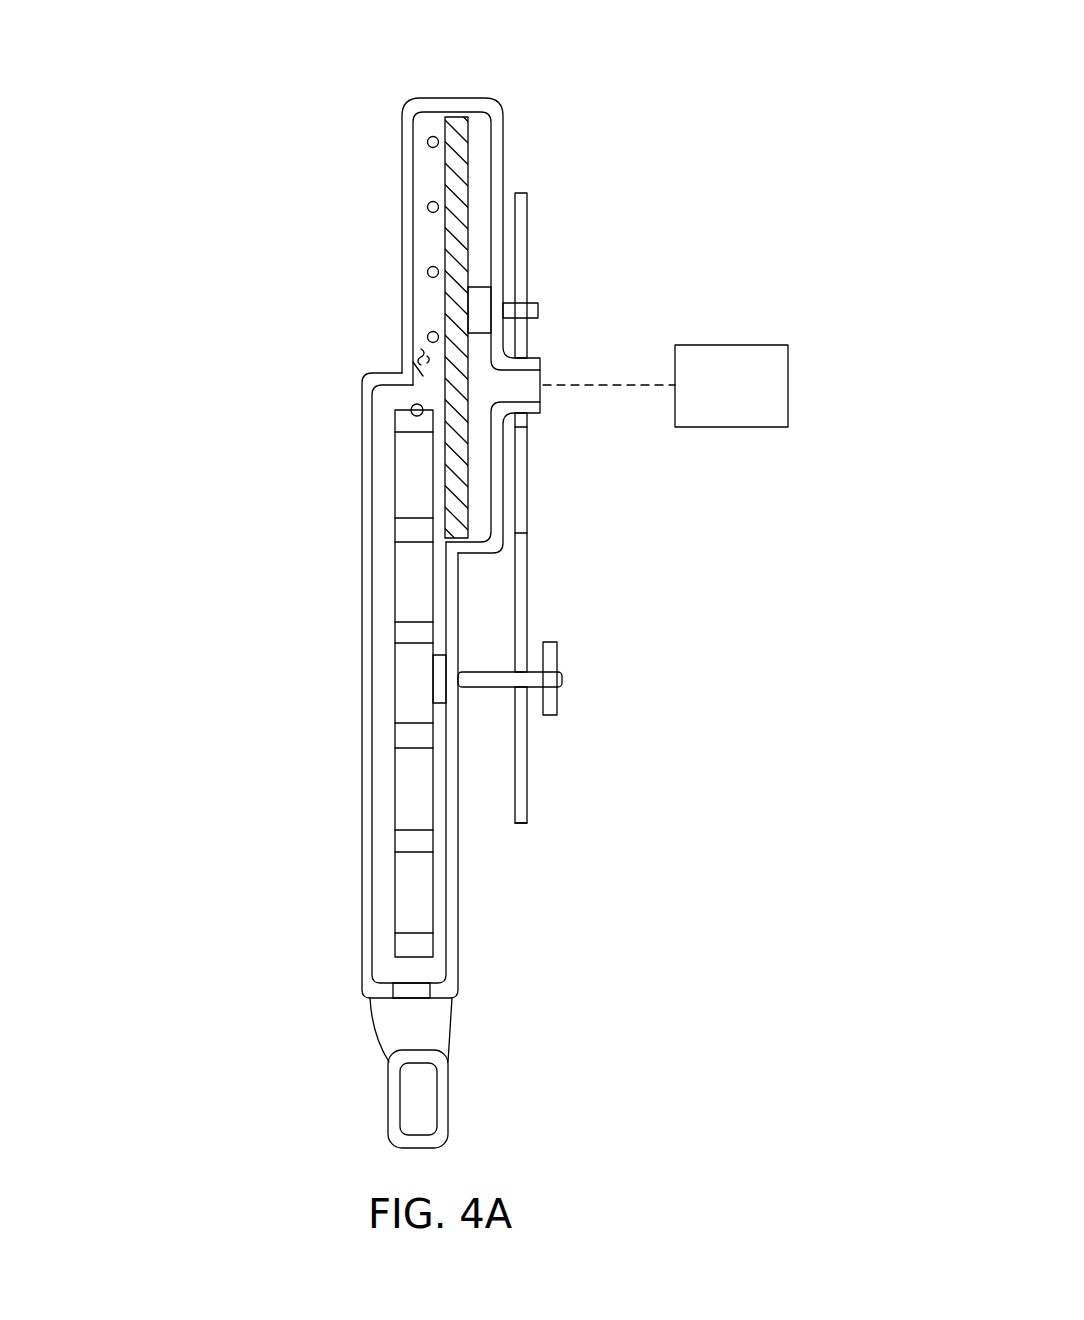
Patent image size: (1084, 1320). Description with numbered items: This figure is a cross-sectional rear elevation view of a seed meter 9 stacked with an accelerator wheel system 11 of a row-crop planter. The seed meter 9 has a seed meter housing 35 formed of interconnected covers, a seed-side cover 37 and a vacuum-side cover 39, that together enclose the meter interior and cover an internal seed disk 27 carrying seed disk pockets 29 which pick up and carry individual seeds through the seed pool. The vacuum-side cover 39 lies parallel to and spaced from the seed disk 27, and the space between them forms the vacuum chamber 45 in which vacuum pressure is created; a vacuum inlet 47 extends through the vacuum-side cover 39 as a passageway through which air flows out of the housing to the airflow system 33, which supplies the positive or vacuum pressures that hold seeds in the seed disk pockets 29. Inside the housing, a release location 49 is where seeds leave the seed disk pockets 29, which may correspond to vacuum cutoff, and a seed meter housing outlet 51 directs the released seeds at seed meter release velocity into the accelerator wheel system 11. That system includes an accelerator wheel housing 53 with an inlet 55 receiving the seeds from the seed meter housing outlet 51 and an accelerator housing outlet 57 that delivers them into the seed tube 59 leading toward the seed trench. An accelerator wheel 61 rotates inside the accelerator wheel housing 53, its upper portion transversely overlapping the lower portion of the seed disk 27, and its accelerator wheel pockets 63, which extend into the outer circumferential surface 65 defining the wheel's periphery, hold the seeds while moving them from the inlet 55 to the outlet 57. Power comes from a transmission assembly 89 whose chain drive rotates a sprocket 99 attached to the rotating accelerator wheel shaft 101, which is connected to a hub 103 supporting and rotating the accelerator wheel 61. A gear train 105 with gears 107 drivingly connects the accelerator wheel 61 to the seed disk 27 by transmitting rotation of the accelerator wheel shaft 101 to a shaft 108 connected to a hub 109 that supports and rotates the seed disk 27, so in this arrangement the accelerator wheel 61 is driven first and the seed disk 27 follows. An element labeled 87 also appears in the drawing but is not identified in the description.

The seed meter 9 is at (470, 70).
The accelerator wheel system 11 is at (285, 738).
The seed disk 27 is at (467, 160).
The seed disk pockets 29 is at (458, 143).
The airflow system 33 is at (733, 345).
The seed meter housing 35 is at (415, 75).
The seed-side cover 37 is at (400, 130).
The vacuum-side cover 39 is at (508, 128).
The vacuum chamber 45 is at (478, 198).
The vacuum inlet 47 is at (532, 362).
The release location 49 is at (409, 328).
The seed meter housing outlet 51 is at (422, 373).
The accelerator wheel housing 53 is at (285, 685).
The inlet 55 is at (422, 390).
The accelerator housing outlet 57 is at (412, 992).
The seed tube 59 is at (455, 1022).
The accelerator wheel 61 is at (390, 560).
The accelerator wheel pockets 63 is at (407, 532).
The outer circumferential surface 65 is at (413, 580).
The actuator assembly 87 is at (550, 730).
The transmission assembly 89 is at (520, 828).
The sprocket 99 is at (560, 694).
The accelerator wheel shaft 101 is at (490, 690).
The hub 103 is at (448, 670).
The gear train 105 is at (528, 505).
The gears 107 is at (520, 223).
The shaft 108 is at (541, 310).
The hub 109 is at (480, 310).